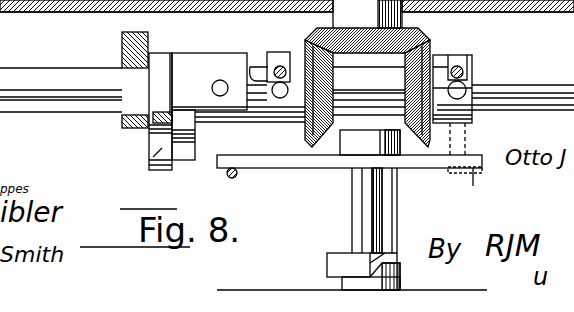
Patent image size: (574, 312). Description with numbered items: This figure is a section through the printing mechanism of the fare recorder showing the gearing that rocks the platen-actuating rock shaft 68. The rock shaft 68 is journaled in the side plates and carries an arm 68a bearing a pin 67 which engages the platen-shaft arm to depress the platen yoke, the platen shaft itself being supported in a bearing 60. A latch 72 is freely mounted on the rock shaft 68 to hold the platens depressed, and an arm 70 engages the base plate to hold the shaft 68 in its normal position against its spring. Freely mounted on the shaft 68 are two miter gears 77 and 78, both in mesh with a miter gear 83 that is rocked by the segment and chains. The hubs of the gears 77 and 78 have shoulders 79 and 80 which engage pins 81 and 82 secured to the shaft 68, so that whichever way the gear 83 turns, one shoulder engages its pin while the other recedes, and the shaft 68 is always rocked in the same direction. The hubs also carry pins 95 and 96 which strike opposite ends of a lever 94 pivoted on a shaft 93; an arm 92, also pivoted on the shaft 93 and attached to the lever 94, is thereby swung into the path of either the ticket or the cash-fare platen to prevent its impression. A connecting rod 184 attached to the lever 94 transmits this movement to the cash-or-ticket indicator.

The bearing 60 is at (122, 125).
The pin 67 is at (150, 137).
The rock shaft 68 is at (65, 88).
The arm 68a is at (182, 113).
The arm 70 is at (170, 175).
The latch 72 is at (140, 170).
The miter gear 77 is at (308, 140).
The miter gear 78 is at (430, 143).
The shoulder 79 is at (250, 66).
The shoulder 80 is at (472, 80).
The pin 81 is at (280, 66).
The pin 82 is at (457, 66).
The miter gear 83 is at (345, 32).
The arm 92 is at (327, 258).
The shaft 93 is at (372, 205).
The lever 94 is at (485, 192).
The pin 95 is at (278, 96).
The pin 96 is at (472, 88).
The connecting rod 184 is at (232, 179).